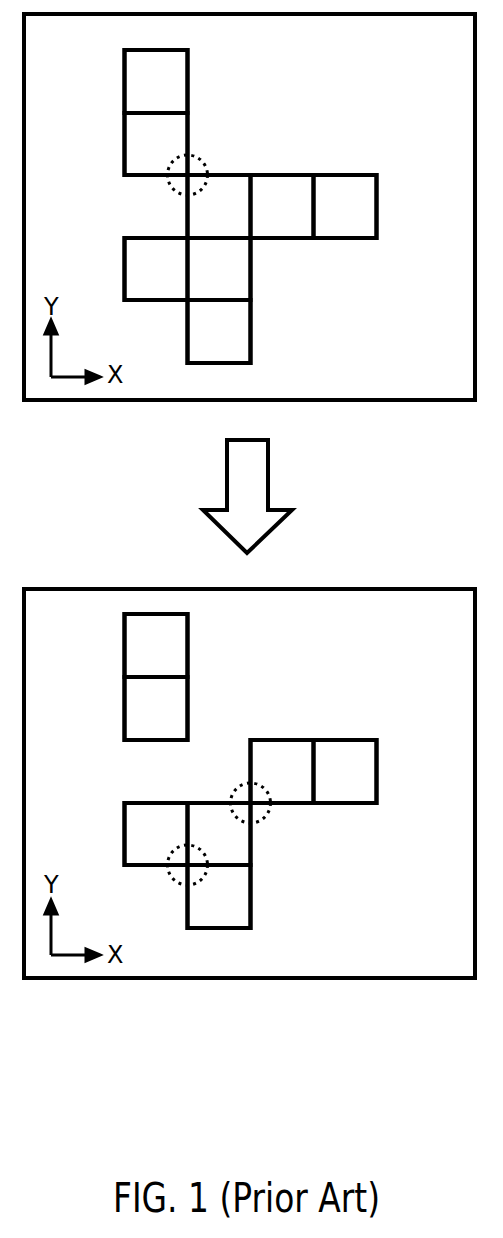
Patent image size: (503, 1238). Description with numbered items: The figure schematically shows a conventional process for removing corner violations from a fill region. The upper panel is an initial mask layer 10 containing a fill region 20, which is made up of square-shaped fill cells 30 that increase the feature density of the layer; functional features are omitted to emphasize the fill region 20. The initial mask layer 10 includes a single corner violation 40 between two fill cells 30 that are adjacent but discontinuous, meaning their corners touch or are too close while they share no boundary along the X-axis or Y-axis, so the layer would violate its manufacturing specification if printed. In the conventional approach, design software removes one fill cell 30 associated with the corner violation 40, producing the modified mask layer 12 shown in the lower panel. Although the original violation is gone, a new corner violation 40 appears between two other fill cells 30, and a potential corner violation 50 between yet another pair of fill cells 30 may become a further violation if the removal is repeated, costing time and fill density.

The initial mask layer 10 is at (453, 65).
The modified mask layer 12 is at (459, 640).
The fill region 20 is at (310, 140).
The fill cells 30 is at (178, 73).
The corner violation 40 is at (172, 182).
The potential corner violation 50 is at (172, 877).